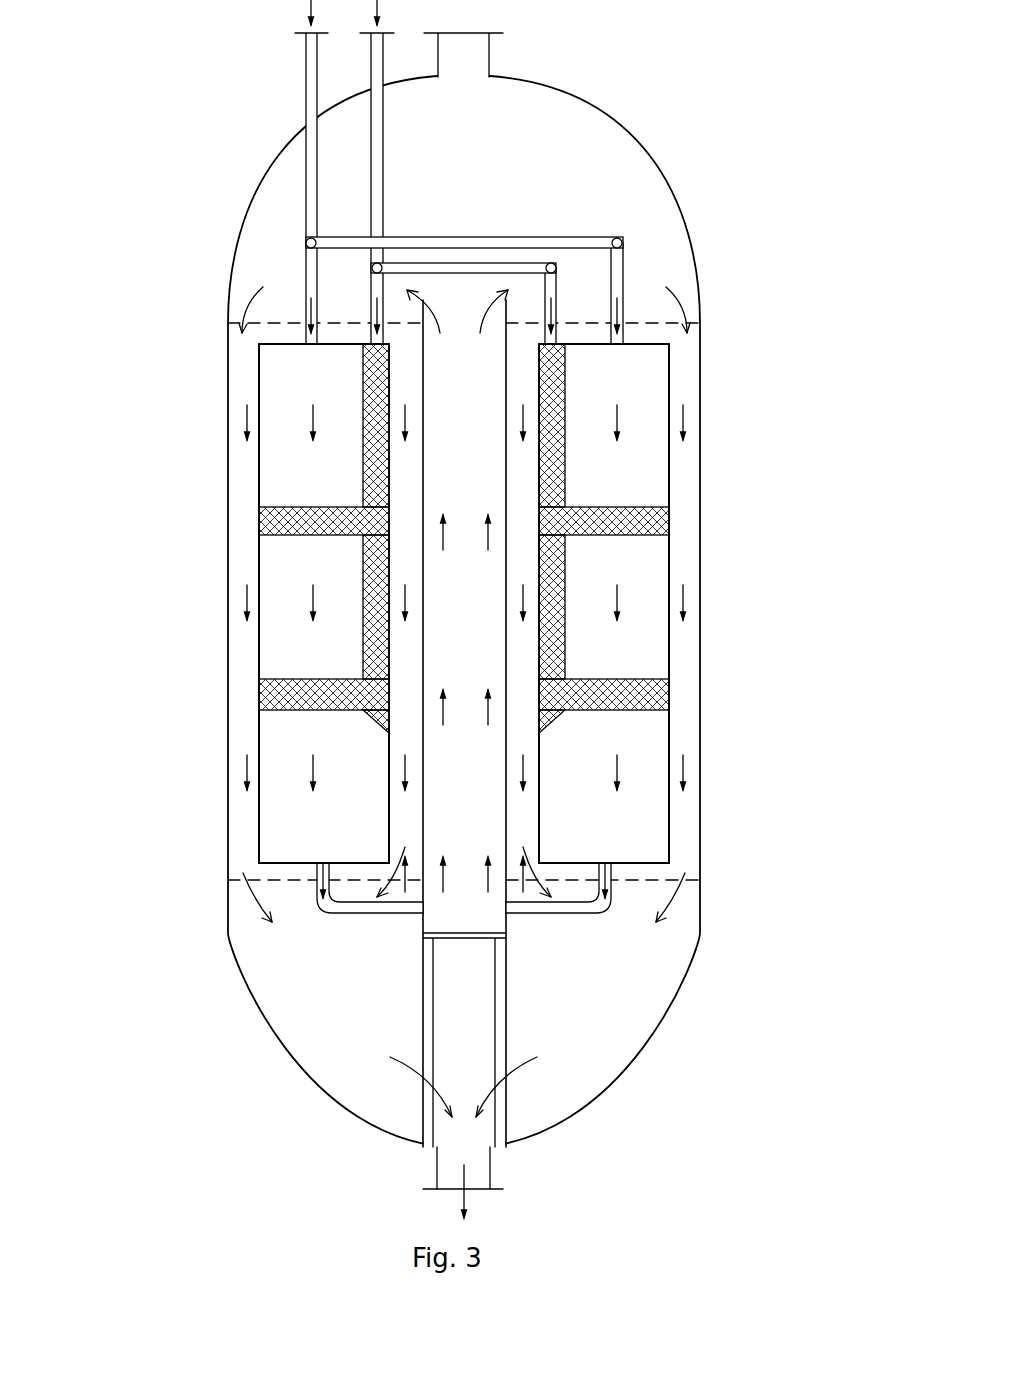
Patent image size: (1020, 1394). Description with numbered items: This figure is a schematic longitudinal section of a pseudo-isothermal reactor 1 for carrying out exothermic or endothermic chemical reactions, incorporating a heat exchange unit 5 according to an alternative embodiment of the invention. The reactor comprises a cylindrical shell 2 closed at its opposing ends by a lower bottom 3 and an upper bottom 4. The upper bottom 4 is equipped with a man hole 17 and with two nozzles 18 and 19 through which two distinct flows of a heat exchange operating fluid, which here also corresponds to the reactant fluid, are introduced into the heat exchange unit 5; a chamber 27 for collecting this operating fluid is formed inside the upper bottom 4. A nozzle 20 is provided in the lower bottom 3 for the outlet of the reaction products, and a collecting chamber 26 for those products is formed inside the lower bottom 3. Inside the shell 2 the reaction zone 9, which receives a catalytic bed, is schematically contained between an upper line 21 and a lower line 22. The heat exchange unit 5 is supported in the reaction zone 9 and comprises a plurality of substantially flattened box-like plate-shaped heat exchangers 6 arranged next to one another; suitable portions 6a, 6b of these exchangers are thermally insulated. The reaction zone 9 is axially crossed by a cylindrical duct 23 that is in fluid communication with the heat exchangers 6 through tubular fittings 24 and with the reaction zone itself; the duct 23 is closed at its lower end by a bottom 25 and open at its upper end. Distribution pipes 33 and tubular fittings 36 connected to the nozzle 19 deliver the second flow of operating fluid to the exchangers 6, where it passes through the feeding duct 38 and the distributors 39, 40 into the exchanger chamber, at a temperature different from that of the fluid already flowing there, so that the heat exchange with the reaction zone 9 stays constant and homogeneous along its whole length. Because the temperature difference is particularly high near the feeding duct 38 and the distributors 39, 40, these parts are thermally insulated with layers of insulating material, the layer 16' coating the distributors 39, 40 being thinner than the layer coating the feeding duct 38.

The pseudo-isothermal reactor 1 is at (722, 95).
The cylindrical shell 2 is at (700, 372).
The lower bottom 3 is at (648, 1070).
The upper bottom 4 is at (618, 120).
The heat exchange unit 5 is at (255, 383).
The heat exchanger 6 is at (275, 493).
The thermally insulated portion of heat exchanger 6a is at (358, 468).
The thermally insulated portion of heat exchanger 6b is at (282, 678).
The reaction zone 9 is at (683, 565).
The layer of insulating material 16' is at (508, 610).
The man hole 17 is at (490, 53).
The nozzle 18 is at (306, 90).
The nozzle 19 is at (371, 63).
The nozzle 20 is at (490, 1168).
The upper line 21 is at (652, 325).
The lower line 22 is at (655, 880).
The cylindrical duct 23 is at (506, 777).
The tubular fitting 24 is at (365, 913).
The bottom 25 is at (463, 940).
The lower chamber 26 is at (342, 1040).
The chamber 27 is at (482, 153).
The gas distribution pipe 33 is at (306, 190).
The tubular fitting 36 is at (383, 197).
The feeding duct 38 is at (535, 470).
The distributor 39 is at (286, 540).
The distributor 40 is at (286, 715).